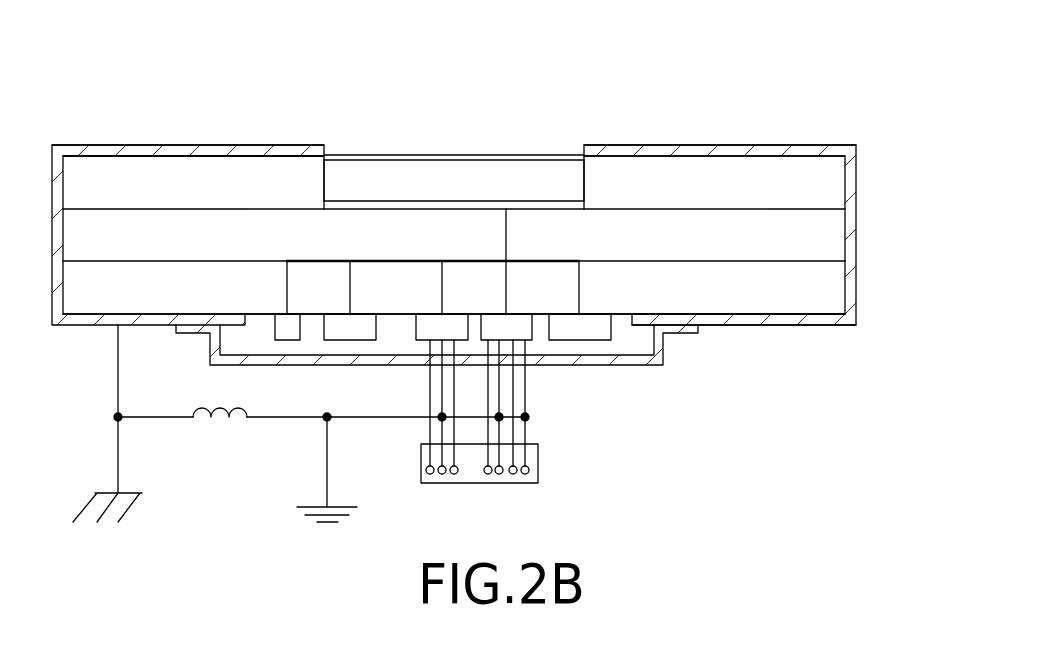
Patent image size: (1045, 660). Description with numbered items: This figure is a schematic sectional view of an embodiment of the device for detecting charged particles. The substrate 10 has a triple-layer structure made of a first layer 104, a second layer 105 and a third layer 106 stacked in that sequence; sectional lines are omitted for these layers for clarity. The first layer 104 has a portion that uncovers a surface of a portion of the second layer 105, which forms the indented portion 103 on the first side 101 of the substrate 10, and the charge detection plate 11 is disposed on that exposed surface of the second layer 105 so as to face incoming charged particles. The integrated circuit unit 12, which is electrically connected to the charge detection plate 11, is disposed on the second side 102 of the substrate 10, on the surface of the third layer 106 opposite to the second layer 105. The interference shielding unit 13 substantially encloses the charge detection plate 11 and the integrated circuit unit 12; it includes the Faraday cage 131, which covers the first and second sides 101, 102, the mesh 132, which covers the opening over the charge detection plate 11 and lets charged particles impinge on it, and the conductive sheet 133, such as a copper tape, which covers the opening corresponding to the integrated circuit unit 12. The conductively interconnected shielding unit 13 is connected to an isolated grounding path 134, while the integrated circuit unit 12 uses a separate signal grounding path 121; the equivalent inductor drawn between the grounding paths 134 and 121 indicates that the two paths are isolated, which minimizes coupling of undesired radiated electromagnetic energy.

The substrate 10 is at (822, 155).
The first side 101 is at (752, 155).
The second side 102 is at (772, 315).
The indented portion 103 is at (326, 179).
The first layer 104 is at (817, 187).
The second layer 105 is at (817, 242).
The third layer 106 is at (817, 295).
The charge detection plate 11 is at (472, 207).
The integrated circuit unit 12 is at (590, 342).
The signal grounding path 121 is at (327, 468).
The interference shielding unit 13 is at (112, 143).
The Faraday cage 131 is at (158, 152).
The mesh 132 is at (433, 158).
The conductive sheet 133 is at (628, 358).
The isolated grounding path 134 is at (118, 458).